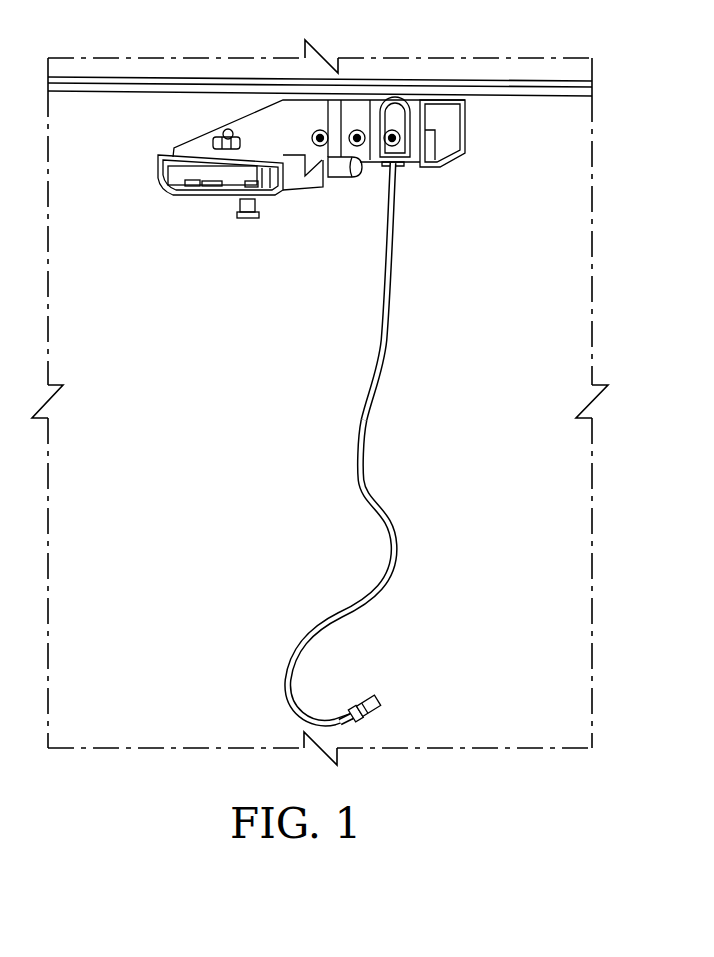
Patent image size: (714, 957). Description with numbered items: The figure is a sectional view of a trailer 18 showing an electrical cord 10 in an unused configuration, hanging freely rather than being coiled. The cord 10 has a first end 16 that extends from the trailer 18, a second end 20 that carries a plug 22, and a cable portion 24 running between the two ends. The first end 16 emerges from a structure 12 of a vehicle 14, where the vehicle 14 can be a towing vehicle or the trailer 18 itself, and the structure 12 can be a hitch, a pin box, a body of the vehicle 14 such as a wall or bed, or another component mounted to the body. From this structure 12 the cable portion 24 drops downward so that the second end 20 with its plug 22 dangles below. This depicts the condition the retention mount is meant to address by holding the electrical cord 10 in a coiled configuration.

The electrical cord 10 is at (386, 334).
The structure 12 is at (508, 84).
The vehicle 14 is at (157, 65).
The first end 16 is at (388, 170).
The trailer 18 is at (564, 65).
The second end 20 is at (347, 718).
The plug 22 is at (380, 703).
The cable portion 24 is at (362, 462).